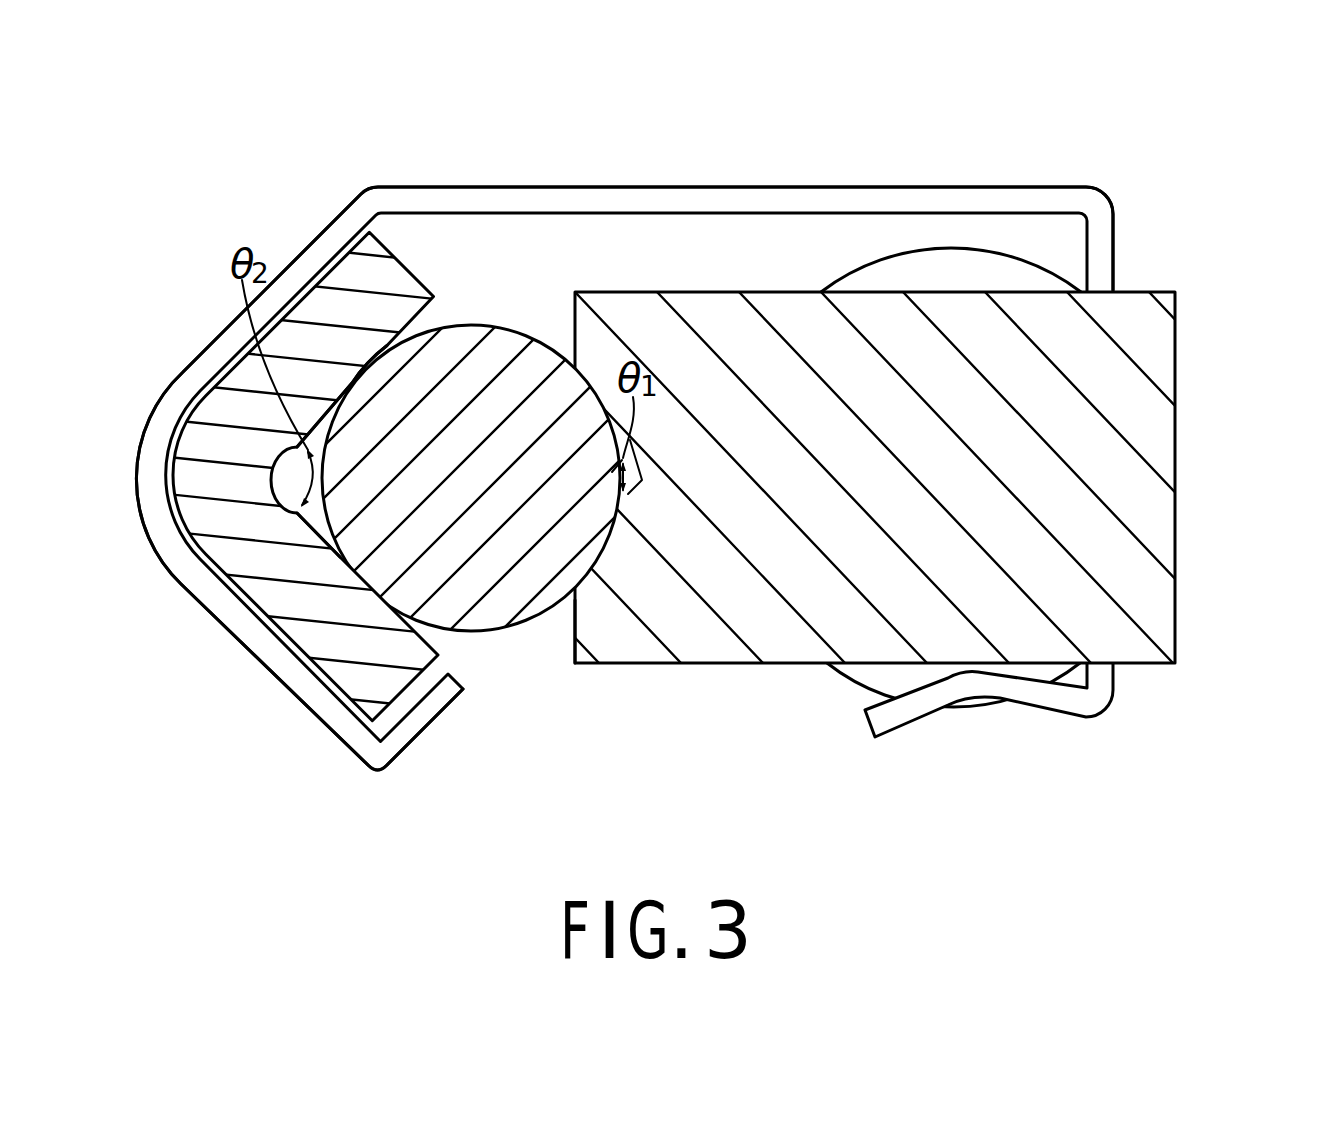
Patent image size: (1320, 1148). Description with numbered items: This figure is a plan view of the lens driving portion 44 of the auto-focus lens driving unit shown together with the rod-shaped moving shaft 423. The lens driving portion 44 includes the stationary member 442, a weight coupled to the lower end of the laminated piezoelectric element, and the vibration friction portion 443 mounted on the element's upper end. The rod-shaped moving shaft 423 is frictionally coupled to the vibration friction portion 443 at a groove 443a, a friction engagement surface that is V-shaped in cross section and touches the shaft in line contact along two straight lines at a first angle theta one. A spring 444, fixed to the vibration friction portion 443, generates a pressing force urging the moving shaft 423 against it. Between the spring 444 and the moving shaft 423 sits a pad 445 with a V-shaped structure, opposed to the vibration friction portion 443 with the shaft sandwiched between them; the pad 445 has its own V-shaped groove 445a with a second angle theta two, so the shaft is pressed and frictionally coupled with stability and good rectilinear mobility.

The lens driving portion 44 is at (930, 116).
The stationary member 442 is at (962, 265).
The vibration friction portion 443 is at (1165, 443).
The groove 443a is at (622, 520).
The spring 444 is at (597, 200).
The pad 445 is at (322, 645).
The groove 445a is at (318, 545).
The rod-shaped moving shaft 423 is at (498, 612).